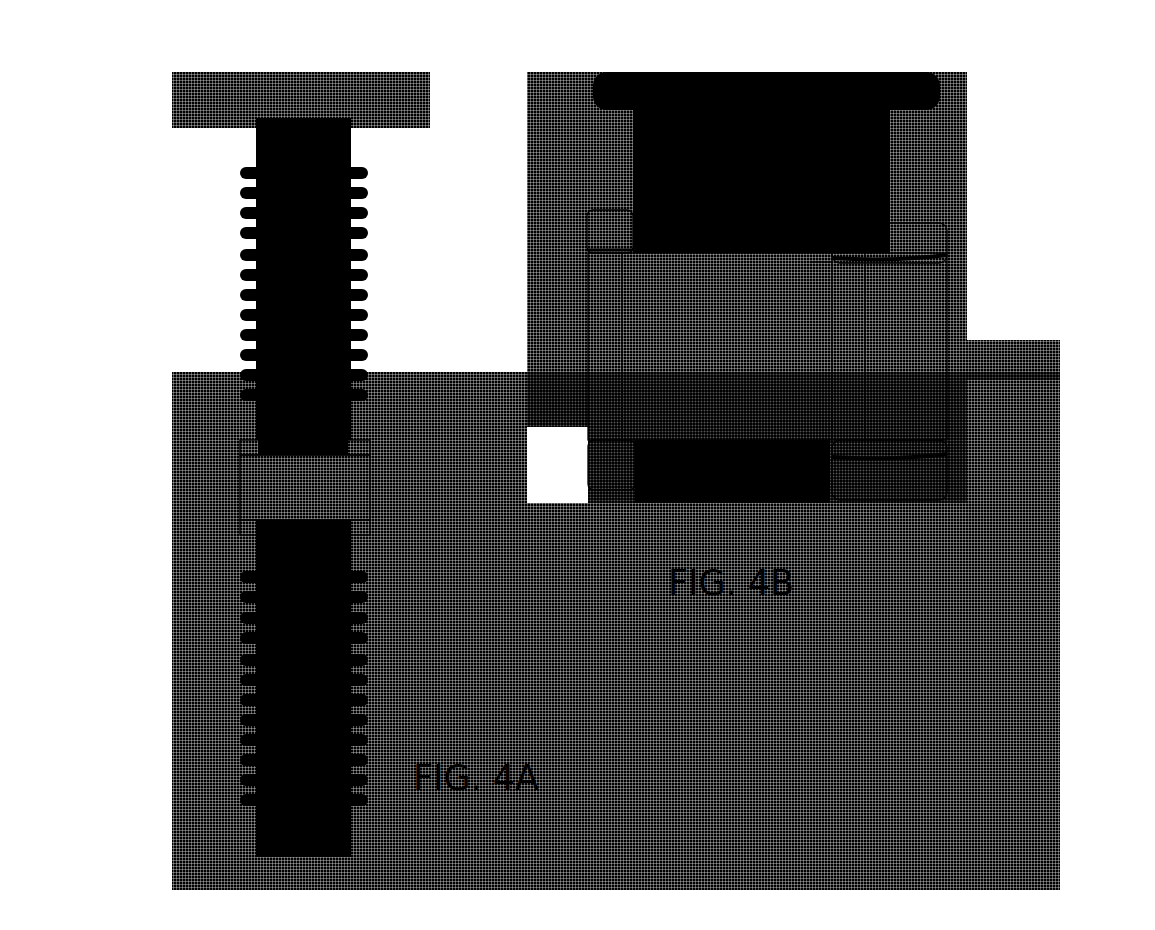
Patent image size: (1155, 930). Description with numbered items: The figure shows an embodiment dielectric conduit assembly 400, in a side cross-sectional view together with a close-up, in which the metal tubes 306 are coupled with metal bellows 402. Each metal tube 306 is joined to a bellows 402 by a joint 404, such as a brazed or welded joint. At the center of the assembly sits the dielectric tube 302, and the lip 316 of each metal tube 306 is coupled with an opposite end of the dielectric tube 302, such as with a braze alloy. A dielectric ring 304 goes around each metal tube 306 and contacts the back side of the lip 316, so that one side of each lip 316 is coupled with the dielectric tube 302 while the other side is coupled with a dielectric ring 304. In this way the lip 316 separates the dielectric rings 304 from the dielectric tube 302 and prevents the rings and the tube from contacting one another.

In FIG. 4A, the assembly 400 is at (134, 123).
In FIG. 4A, the bellows 402 is at (240, 315).
In FIG. 4B, the bellows 402 is at (933, 107).
In FIG. 4A, the dielectric tube 302 is at (240, 505).
In FIG. 4B, the dielectric tube 302 is at (588, 345).
In FIG. 4A, the dielectric ring 304 is at (240, 443).
In FIG. 4B, the dielectric ring 304 is at (938, 237).
In FIG. 4A, the metal tube 306 is at (350, 432).
In FIG. 4B, the metal tube 306 is at (633, 200).
In FIG. 4A, the joint 404 is at (297, 527).
In FIG. 4B, the joint 404 is at (813, 167).
In FIG. 4B, the lip 316 is at (810, 265).